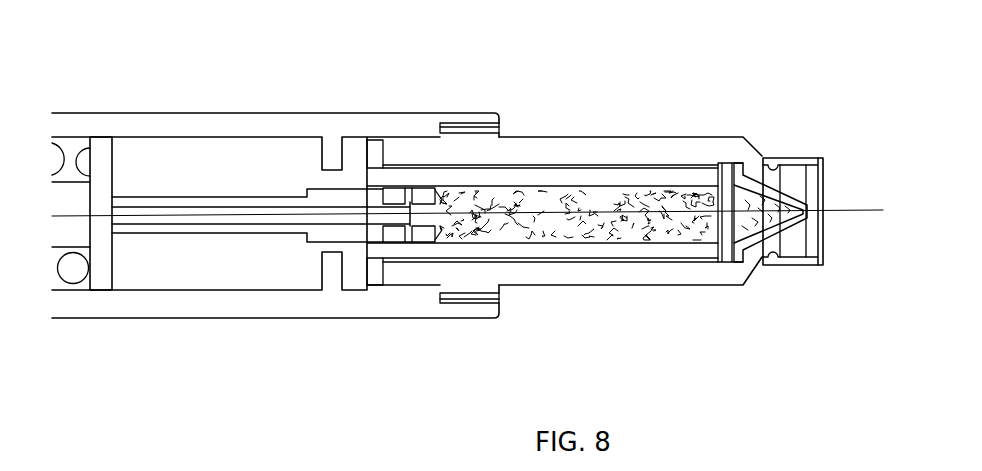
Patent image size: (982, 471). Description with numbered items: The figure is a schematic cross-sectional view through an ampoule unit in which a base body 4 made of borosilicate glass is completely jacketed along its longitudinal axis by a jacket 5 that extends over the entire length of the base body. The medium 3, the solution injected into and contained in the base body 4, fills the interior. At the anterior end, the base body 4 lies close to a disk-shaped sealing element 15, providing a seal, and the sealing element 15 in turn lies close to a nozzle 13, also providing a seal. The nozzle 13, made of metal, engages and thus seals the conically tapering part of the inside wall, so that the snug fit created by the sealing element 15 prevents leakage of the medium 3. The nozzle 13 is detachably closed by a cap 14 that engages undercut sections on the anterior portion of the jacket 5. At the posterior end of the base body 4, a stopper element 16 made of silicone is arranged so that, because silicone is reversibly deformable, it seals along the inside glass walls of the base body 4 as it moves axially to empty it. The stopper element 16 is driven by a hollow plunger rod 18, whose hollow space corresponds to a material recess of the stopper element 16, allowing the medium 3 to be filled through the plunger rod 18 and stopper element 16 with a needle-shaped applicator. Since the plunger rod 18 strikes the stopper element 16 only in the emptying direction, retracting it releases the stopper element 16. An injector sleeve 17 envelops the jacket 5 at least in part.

The medium 3 is at (631, 207).
The base body 4 is at (577, 257).
The jacket 5 is at (618, 275).
The nozzle 13 is at (752, 178).
The cap 14 is at (813, 170).
The sealing element 15 is at (728, 167).
The stopper element 16 is at (412, 202).
The injector sleeve 17 is at (245, 127).
The plunger rod 18 is at (323, 200).